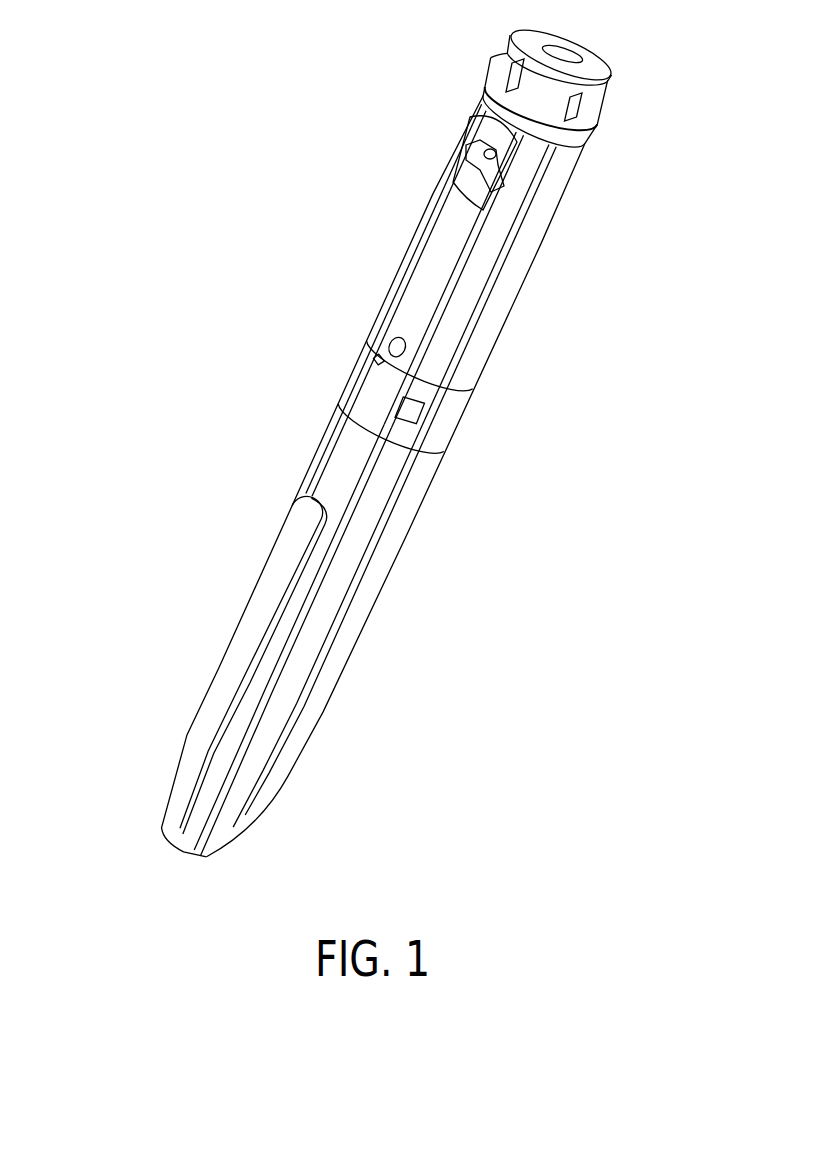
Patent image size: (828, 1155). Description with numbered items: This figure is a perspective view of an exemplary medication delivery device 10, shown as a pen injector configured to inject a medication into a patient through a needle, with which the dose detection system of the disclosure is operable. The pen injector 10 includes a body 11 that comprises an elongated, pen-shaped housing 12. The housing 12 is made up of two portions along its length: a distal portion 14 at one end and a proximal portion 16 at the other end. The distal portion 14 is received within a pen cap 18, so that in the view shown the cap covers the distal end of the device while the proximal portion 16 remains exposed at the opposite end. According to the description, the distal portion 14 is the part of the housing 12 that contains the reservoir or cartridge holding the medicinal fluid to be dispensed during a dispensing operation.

The medication delivery device 10 is at (373, 451).
The body 11 is at (510, 337).
The housing 12 is at (413, 305).
The distal portion 14 is at (190, 644).
The proximal portion 16 is at (422, 165).
The pen cap 18 is at (345, 698).